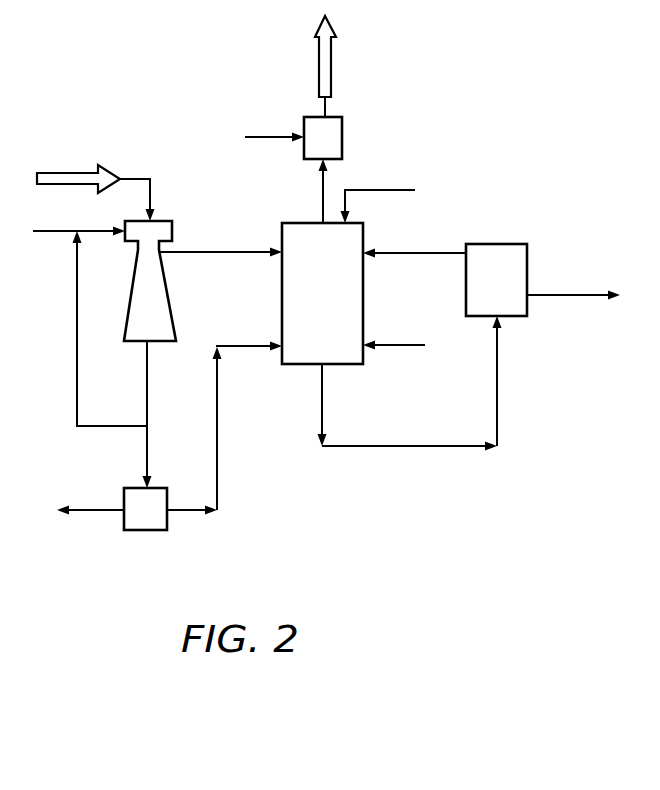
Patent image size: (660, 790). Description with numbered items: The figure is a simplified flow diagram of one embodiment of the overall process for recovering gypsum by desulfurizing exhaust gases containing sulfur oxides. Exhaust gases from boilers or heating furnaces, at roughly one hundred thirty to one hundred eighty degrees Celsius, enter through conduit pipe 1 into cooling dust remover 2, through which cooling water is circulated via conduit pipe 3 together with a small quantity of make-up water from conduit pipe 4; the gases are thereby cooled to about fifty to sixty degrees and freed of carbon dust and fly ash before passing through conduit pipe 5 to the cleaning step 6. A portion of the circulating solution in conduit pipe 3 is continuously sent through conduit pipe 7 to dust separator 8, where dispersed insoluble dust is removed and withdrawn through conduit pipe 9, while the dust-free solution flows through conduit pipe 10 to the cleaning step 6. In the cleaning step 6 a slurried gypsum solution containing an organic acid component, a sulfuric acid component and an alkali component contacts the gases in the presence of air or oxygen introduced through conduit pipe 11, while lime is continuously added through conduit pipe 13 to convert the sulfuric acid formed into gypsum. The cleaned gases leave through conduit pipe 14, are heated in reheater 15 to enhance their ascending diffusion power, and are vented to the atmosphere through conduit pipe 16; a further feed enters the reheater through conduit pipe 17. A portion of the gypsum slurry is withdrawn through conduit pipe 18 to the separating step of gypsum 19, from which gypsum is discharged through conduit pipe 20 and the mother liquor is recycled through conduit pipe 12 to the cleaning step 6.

The conduit pipe 1 is at (62, 165).
The cooling dust remover 2 is at (155, 317).
The conduit pipe 3 is at (101, 328).
The conduit pipe 4 is at (79, 242).
The conduit pipe 5 is at (221, 244).
The cleaning step 6 is at (323, 309).
The conduit pipe 7 is at (140, 414).
The dust separator 8 is at (149, 525).
The conduit pipe 9 is at (90, 520).
The conduit pipe 10 is at (224, 428).
The conduit pipe 11 is at (394, 334).
The conduit pipe 12 is at (414, 244).
The conduit pipe 13 is at (378, 194).
The conduit pipe 14 is at (309, 191).
The reheater 15 is at (323, 138).
The conduit pipe 16 is at (335, 66).
The inlet line 17 is at (274, 127).
The conduit pipe 18 is at (410, 395).
The separating step of gypsum 19 is at (496, 280).
The conduit pipe 20 is at (573, 284).